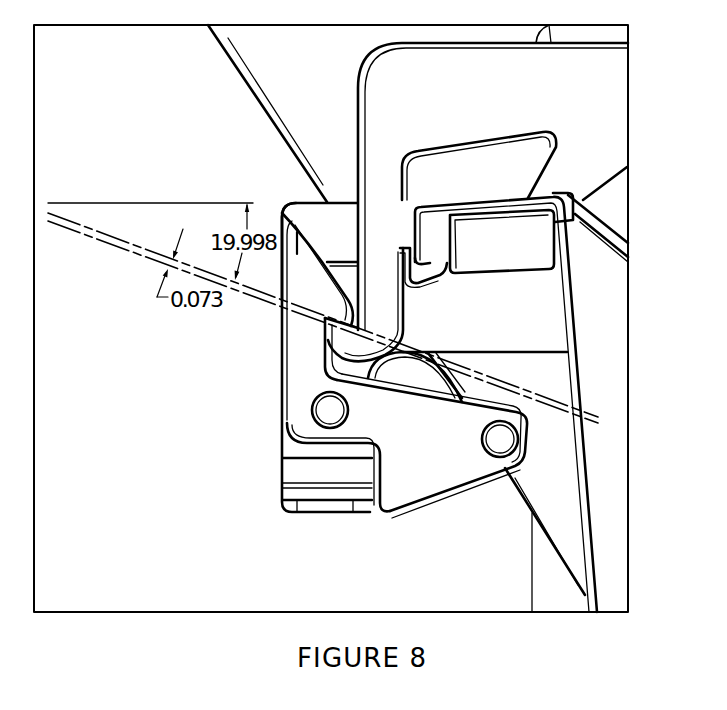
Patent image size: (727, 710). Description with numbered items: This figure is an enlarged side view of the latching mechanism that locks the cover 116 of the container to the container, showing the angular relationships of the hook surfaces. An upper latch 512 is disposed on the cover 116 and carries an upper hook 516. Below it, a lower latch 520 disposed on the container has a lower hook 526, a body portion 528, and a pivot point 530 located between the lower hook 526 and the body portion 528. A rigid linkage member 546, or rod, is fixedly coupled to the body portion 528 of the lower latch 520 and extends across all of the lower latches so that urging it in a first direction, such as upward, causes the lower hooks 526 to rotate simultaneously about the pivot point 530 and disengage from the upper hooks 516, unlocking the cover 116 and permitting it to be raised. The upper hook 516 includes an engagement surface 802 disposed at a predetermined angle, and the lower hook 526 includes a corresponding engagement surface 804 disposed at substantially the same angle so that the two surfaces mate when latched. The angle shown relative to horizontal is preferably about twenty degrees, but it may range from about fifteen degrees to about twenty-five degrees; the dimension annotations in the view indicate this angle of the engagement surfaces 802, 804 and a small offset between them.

The cover 116 is at (620, 198).
The upper latch 512 is at (393, 90).
The upper hook 516 is at (386, 310).
The lower latch 520 is at (298, 390).
The lower hook 526 is at (282, 213).
The body portion 528 is at (426, 465).
The pivot point 530 is at (330, 408).
The linkage member 546 is at (506, 440).
The engagement surface 802 is at (325, 319).
The engagement surface 804 is at (329, 238).